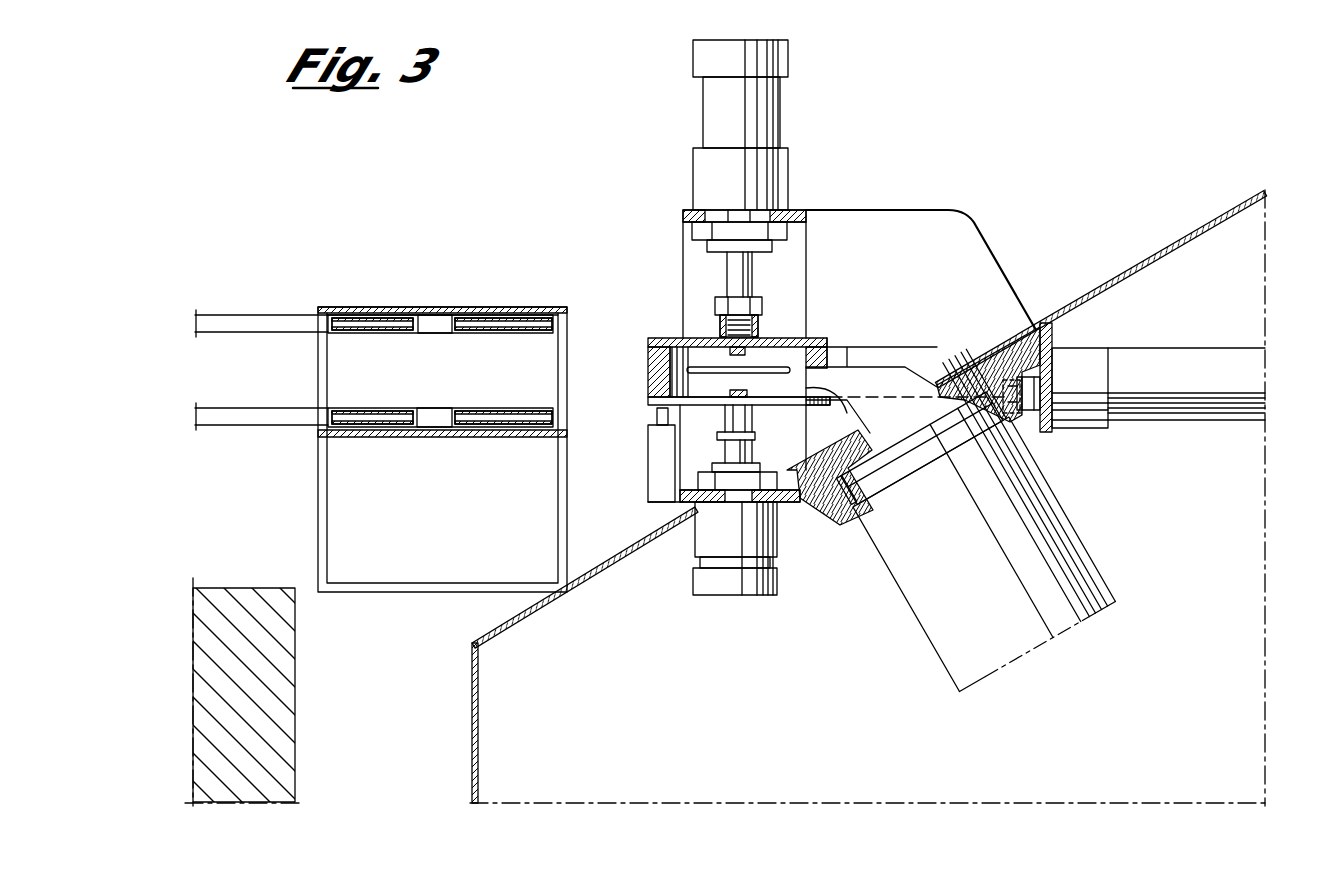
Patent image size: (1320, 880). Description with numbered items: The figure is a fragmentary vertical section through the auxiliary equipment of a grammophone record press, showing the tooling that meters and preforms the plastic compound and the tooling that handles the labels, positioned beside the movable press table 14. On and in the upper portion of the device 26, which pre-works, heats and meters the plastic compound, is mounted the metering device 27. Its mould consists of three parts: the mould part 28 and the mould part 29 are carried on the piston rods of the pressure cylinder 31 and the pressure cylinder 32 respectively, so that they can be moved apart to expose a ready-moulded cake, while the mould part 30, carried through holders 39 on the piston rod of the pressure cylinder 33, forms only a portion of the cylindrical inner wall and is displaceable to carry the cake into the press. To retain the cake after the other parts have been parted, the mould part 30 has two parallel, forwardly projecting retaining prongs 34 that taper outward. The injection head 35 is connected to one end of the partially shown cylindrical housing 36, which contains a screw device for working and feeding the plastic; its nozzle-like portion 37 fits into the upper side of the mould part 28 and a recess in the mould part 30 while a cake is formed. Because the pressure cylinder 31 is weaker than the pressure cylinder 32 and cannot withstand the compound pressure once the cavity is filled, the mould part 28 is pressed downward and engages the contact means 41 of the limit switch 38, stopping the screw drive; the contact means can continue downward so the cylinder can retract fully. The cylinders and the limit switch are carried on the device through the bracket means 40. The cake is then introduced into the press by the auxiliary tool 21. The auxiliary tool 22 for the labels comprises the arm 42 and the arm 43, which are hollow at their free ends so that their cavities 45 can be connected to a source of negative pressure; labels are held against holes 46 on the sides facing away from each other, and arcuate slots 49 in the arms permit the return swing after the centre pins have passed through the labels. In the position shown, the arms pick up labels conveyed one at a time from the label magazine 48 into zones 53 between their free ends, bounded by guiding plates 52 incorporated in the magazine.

The press table 14 is at (284, 698).
The auxiliary tool 21 is at (791, 200).
The auxiliary tool 22 is at (250, 317).
The device 26 is at (471, 697).
The metering device 27 is at (659, 329).
The mould part 28 is at (770, 406).
The mould part 29 is at (778, 345).
The mould part 30 is at (825, 350).
The pressure cylinder 31 is at (772, 545).
The pressure cylinder 32 is at (712, 110).
The pressure cylinder 33 is at (1192, 360).
The retaining prongs 34 is at (790, 365).
The injection head 35 is at (890, 365).
The cylindrical housing 36 is at (900, 578).
The nozzle-like portion 37 is at (832, 398).
The limit switch 38 is at (648, 466).
The holders 39 is at (950, 355).
The bracket means 40 is at (804, 258).
The contact means 41 is at (656, 416).
The arm 42 is at (290, 320).
The arm 43 is at (261, 413).
The cavities 45 is at (540, 325).
The holes 46 is at (370, 320).
The label magazine 48 is at (315, 530).
The arcuate slots 49 is at (428, 323).
The guiding plates 52 is at (378, 310).
The zones 53 is at (518, 310).